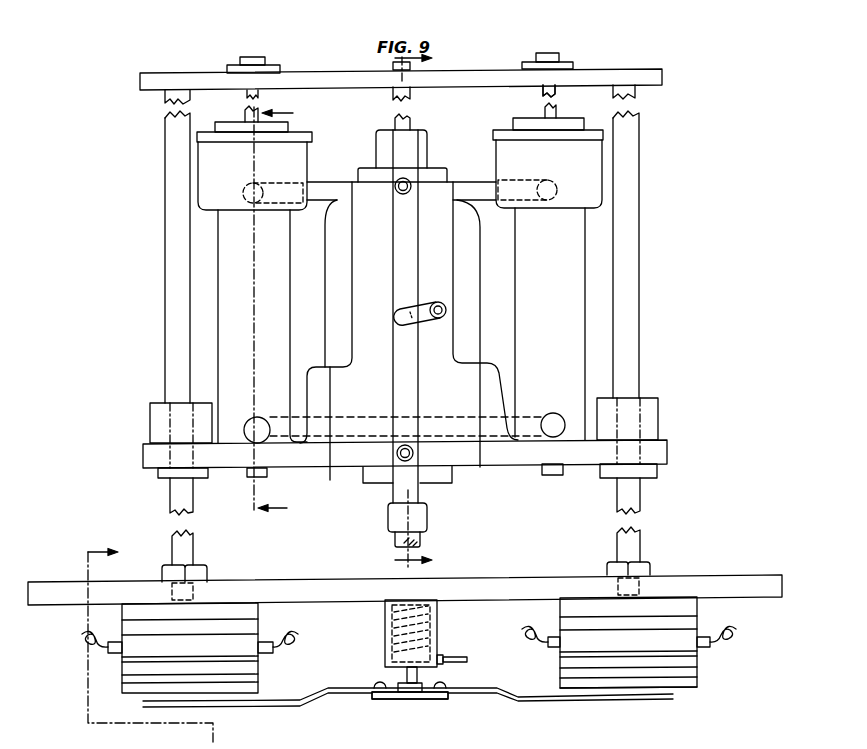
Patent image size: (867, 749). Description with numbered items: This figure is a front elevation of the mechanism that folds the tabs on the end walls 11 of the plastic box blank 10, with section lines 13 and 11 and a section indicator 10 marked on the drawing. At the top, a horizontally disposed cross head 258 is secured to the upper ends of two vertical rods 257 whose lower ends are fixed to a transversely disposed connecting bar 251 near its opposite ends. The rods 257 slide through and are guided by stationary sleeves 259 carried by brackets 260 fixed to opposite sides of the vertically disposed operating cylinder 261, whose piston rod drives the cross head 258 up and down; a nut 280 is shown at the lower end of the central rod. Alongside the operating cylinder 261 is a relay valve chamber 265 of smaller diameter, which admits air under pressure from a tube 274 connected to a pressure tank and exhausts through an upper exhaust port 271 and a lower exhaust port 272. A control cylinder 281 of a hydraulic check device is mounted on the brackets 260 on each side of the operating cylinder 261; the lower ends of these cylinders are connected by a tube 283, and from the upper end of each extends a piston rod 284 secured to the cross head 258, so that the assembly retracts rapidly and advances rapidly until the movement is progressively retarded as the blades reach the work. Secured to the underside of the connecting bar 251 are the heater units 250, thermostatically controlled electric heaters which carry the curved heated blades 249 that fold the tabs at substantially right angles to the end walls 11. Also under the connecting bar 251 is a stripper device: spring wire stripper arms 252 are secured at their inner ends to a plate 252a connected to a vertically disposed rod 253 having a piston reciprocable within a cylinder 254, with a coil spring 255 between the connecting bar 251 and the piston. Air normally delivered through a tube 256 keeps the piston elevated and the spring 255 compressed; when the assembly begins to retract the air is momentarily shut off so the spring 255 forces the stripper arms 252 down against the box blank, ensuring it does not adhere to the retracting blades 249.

The plastic box blank 10 is at (276, 314).
The end walls 11 is at (139, 643).
The section line 13 is at (426, 311).
The curved heated blades 249 is at (688, 684).
The heater units 250 is at (260, 668).
The connecting bar 251 is at (528, 579).
The spring wire stripper arms 252 is at (518, 701).
The plate 252a is at (427, 700).
The rod 253 is at (410, 678).
The cylinder 254 is at (427, 640).
The coil spring 255 is at (423, 623).
The tube 256 is at (455, 663).
The vertical rods 257 is at (176, 318).
The cross head 258 is at (660, 80).
The stationary sleeves 259 is at (658, 428).
The brackets 260 is at (497, 372).
The operating cylinder 261 is at (452, 305).
The relay valve chamber 265 is at (410, 283).
The exhaust port 271 is at (408, 181).
The exhaust port 272 is at (414, 455).
The tube 274 is at (423, 322).
The nut 280 is at (397, 540).
The control cylinder 281 is at (278, 284).
The tube 283 is at (511, 434).
The piston rod 284 is at (556, 95).